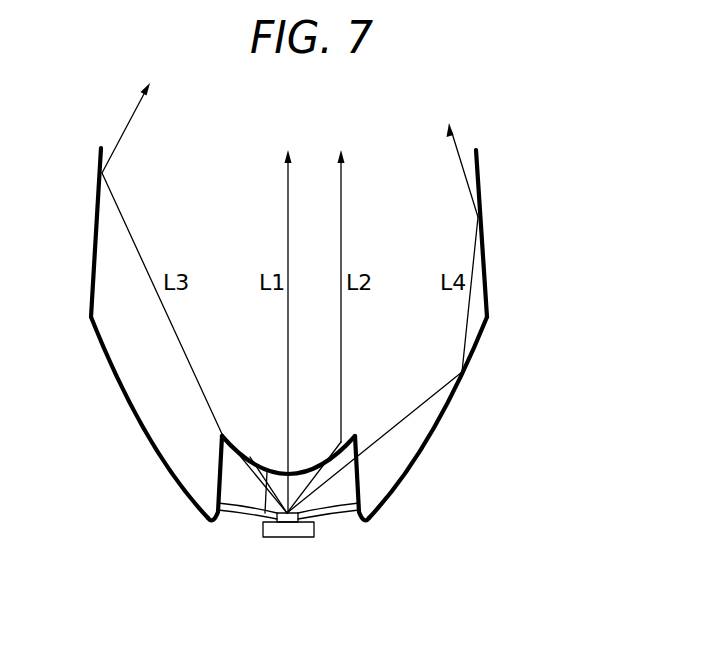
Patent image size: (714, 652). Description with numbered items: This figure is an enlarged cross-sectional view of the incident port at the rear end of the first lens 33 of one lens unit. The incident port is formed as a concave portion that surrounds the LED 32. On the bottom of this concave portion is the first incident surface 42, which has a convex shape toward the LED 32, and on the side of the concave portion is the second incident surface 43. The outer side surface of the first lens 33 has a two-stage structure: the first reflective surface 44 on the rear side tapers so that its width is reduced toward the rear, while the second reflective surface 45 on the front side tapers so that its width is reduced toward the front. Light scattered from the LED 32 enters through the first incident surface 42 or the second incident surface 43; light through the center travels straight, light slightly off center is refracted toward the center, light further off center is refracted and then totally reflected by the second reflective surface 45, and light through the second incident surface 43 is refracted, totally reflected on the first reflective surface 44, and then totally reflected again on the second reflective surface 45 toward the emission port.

The LED 32 is at (287, 538).
The first lens 33 is at (147, 382).
The first incident surface 42 is at (250, 458).
The second incident surface 43 is at (361, 483).
The first reflective surface 44 is at (448, 410).
The second reflective surface 45 is at (480, 180).